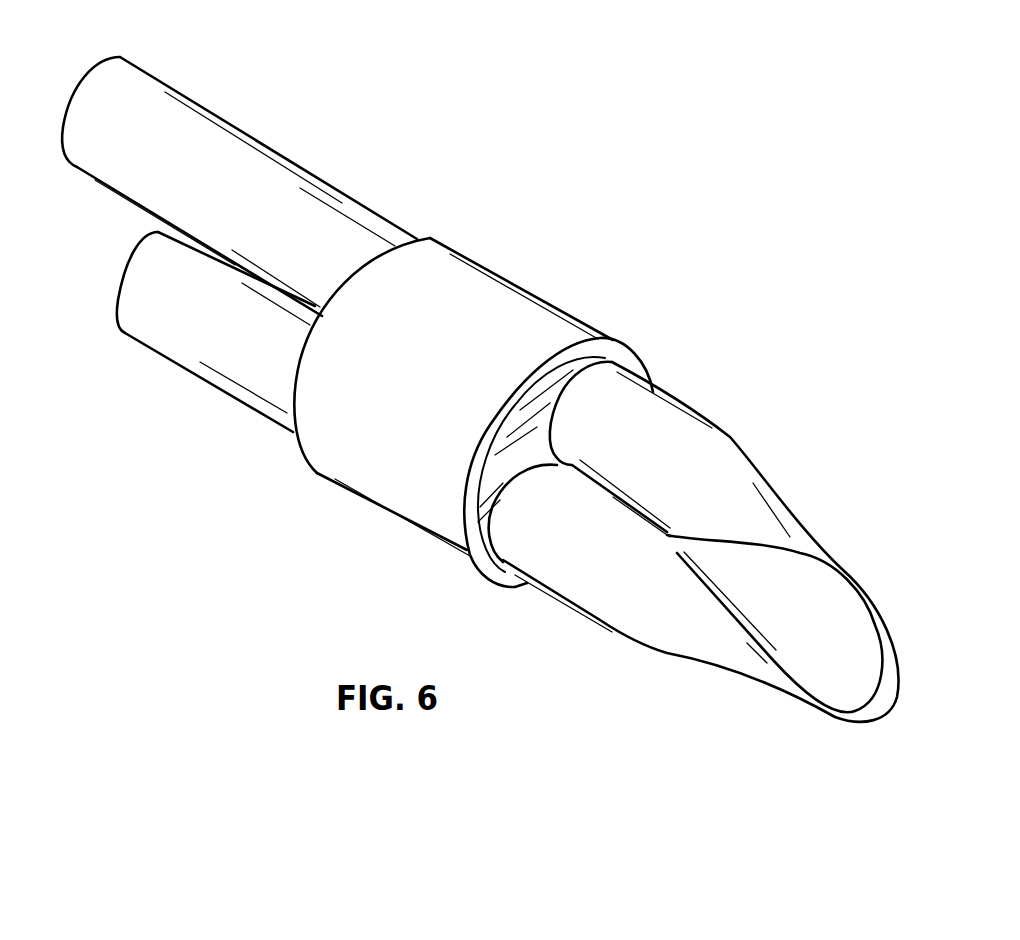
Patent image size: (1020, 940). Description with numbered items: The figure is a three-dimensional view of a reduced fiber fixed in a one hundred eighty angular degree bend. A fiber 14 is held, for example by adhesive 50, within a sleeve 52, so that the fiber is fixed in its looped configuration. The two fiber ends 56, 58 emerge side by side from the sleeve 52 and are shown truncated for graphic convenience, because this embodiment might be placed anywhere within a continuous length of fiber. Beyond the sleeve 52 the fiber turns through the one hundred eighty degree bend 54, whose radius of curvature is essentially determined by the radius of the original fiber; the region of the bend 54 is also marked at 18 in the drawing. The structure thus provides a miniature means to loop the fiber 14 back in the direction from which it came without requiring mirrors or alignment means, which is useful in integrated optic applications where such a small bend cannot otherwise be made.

The fiber 14 is at (257, 175).
The nozzle tip 18 is at (845, 572).
The adhesive 50 is at (552, 390).
The sleeve 52 is at (456, 272).
The 180 degree bend 54 is at (872, 720).
The fiber end 56 is at (80, 72).
The fiber end 58 is at (120, 330).